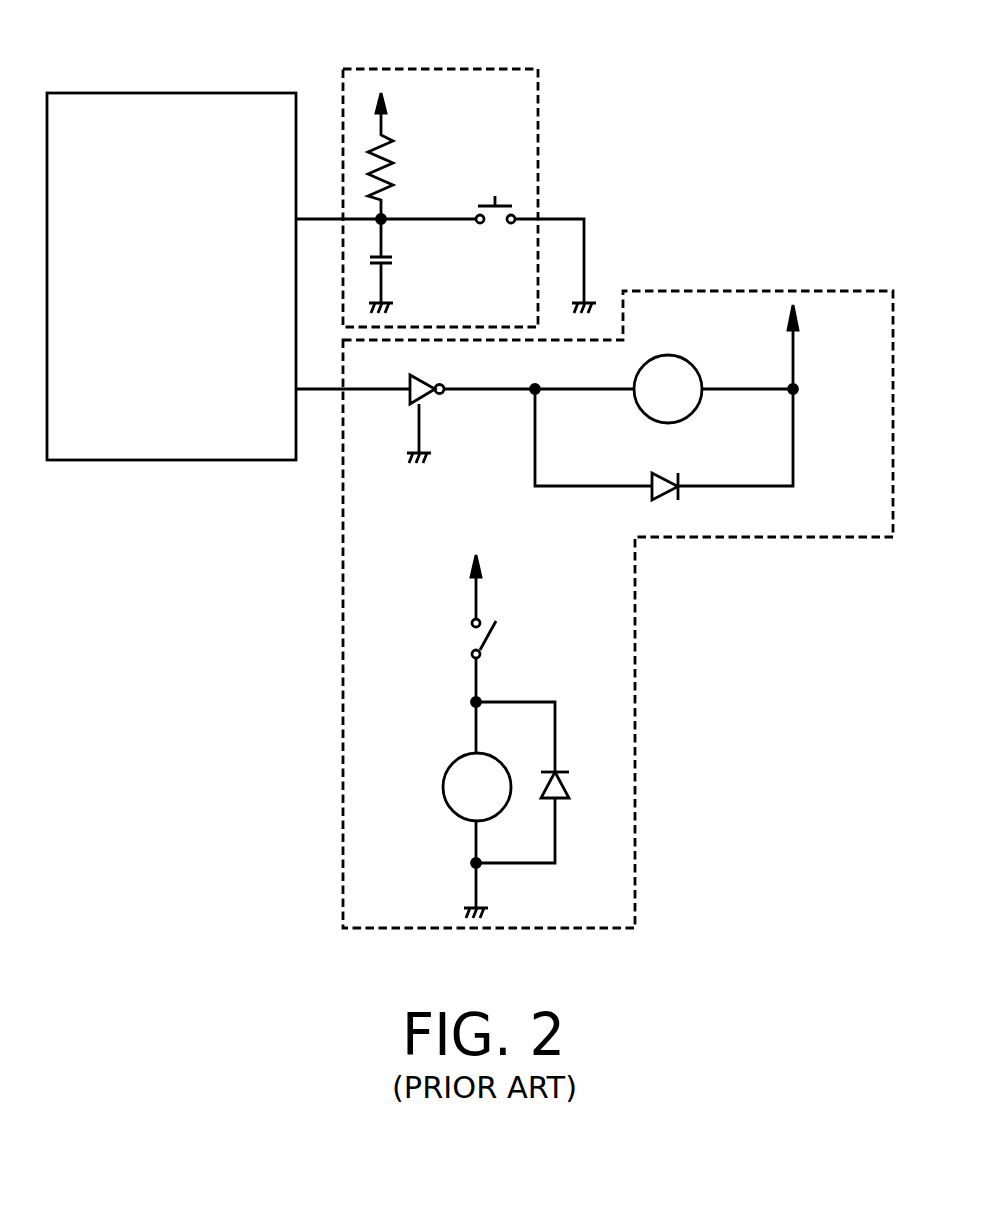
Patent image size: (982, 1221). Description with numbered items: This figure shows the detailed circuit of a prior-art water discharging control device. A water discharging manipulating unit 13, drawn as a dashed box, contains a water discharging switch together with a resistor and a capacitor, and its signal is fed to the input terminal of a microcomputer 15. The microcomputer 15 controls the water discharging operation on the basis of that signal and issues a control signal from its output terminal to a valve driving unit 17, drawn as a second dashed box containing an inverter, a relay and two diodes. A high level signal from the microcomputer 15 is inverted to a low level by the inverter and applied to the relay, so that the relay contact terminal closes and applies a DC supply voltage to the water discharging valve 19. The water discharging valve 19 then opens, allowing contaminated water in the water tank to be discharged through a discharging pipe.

The water discharging manipulating unit 13 is at (540, 80).
The microcomputer 15 is at (224, 92).
The valve driving unit 17 is at (713, 284).
The water discharging valve 19 is at (451, 766).